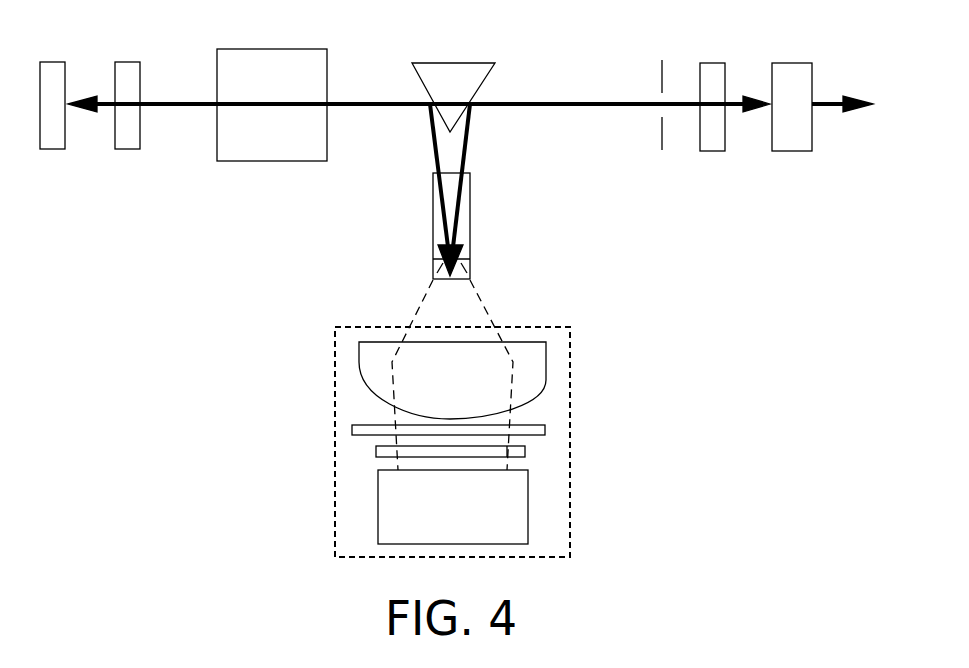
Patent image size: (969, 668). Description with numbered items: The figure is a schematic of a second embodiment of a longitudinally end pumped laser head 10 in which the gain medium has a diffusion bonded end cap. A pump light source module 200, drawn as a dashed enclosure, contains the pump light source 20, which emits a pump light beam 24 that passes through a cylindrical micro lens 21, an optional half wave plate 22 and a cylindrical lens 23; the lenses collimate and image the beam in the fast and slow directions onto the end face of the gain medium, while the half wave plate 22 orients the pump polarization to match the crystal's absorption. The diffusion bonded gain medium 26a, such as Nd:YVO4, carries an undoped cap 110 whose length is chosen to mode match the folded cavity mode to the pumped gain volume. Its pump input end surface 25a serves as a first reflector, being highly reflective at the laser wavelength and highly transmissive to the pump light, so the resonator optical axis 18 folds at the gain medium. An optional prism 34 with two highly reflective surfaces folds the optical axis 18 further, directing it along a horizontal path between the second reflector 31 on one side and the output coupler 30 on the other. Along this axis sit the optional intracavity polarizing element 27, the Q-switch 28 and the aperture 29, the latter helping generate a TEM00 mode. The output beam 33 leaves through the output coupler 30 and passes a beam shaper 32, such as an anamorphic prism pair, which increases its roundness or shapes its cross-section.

The laser head 10 is at (777, 398).
The resonator optical axis 18 is at (470, 133).
The pump light source 20 is at (355, 512).
The cylindrical micro lens 21 is at (344, 481).
The half wave plate 22 is at (353, 449).
The cylindrical lens 23 is at (364, 380).
The pump light beam 24 is at (363, 420).
The pump input end surface 25a is at (529, 292).
The diffusion bonded gain medium 26a is at (323, 218).
The intracavity polarizing element 27 is at (152, 138).
The Q-switch 28 is at (275, 135).
The aperture 29 is at (628, 138).
The output coupler 30 is at (696, 139).
The second reflector 31 is at (77, 138).
The beam shaper 32 is at (780, 139).
The output beam 33 is at (818, 182).
The prism 34 is at (426, 75).
The undoped cap 110 is at (532, 278).
The pump light source module 200 is at (527, 442).